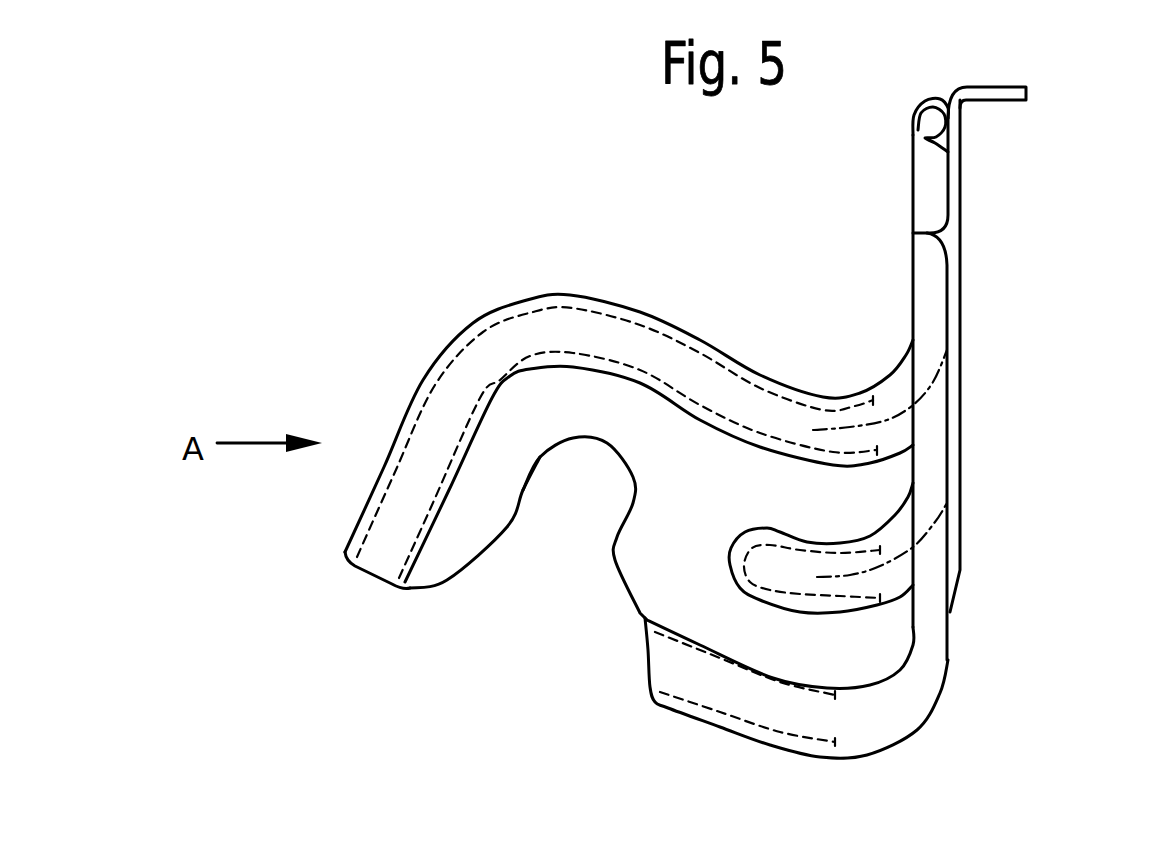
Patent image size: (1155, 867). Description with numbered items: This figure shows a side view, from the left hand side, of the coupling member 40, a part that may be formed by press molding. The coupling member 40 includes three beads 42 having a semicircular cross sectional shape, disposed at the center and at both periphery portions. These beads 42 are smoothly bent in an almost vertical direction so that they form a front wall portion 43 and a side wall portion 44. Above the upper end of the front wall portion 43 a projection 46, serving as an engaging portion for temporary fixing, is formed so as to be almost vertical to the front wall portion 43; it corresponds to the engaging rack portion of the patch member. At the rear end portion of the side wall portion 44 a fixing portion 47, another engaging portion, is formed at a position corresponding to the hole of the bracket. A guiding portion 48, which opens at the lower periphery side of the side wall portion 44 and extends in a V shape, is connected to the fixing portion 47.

The coupling member 40 is at (530, 290).
The beads 42 is at (752, 412).
The front wall portion 43 is at (960, 422).
The side wall portion 44 is at (687, 468).
The projection 46 is at (1019, 87).
The fixing portion 47 is at (527, 488).
The guiding portion 48 is at (457, 573).